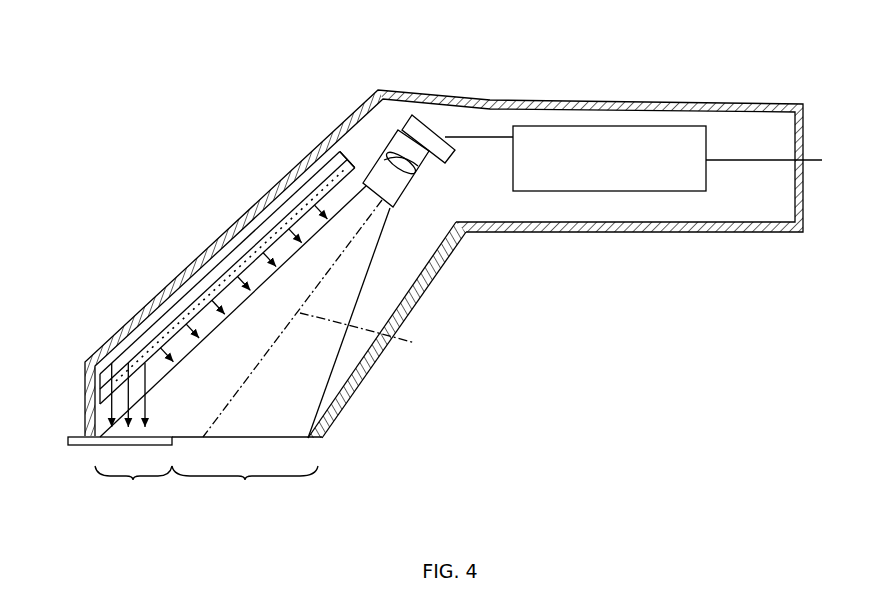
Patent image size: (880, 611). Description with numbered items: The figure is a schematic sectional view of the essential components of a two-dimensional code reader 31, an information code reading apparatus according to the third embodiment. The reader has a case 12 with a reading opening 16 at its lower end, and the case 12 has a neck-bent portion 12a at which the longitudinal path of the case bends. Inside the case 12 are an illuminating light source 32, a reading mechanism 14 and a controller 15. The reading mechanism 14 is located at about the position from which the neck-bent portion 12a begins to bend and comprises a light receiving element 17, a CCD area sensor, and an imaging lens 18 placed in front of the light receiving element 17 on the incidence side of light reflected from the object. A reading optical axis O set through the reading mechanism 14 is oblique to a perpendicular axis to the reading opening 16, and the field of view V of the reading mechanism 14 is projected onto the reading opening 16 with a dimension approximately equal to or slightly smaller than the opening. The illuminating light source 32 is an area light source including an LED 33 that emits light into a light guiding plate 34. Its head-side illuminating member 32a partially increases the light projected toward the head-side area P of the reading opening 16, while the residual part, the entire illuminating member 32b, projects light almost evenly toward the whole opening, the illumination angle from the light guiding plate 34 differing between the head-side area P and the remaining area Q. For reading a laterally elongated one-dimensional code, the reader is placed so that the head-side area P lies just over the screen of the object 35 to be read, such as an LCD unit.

The case 12 is at (397, 90).
The neck-bent portion 12a is at (415, 303).
The reading mechanism 14 is at (413, 207).
The controller 15 is at (632, 137).
The reading opening 16 is at (293, 440).
The light receiving element 17 is at (430, 122).
The imaging lens 18 is at (392, 148).
The two-dimensional code reader 31 is at (503, 88).
The illuminating light source 32 is at (192, 271).
The head-side illuminating member 32a is at (119, 362).
The entire illuminating member 32b is at (245, 238).
The LED 33 is at (358, 172).
The light guiding plate 34 is at (213, 283).
The object to be read 35 is at (78, 436).
The reading optical axis O is at (367, 333).
The field of view V is at (331, 371).
The head-side area P is at (133, 485).
The remaining area Q is at (245, 485).